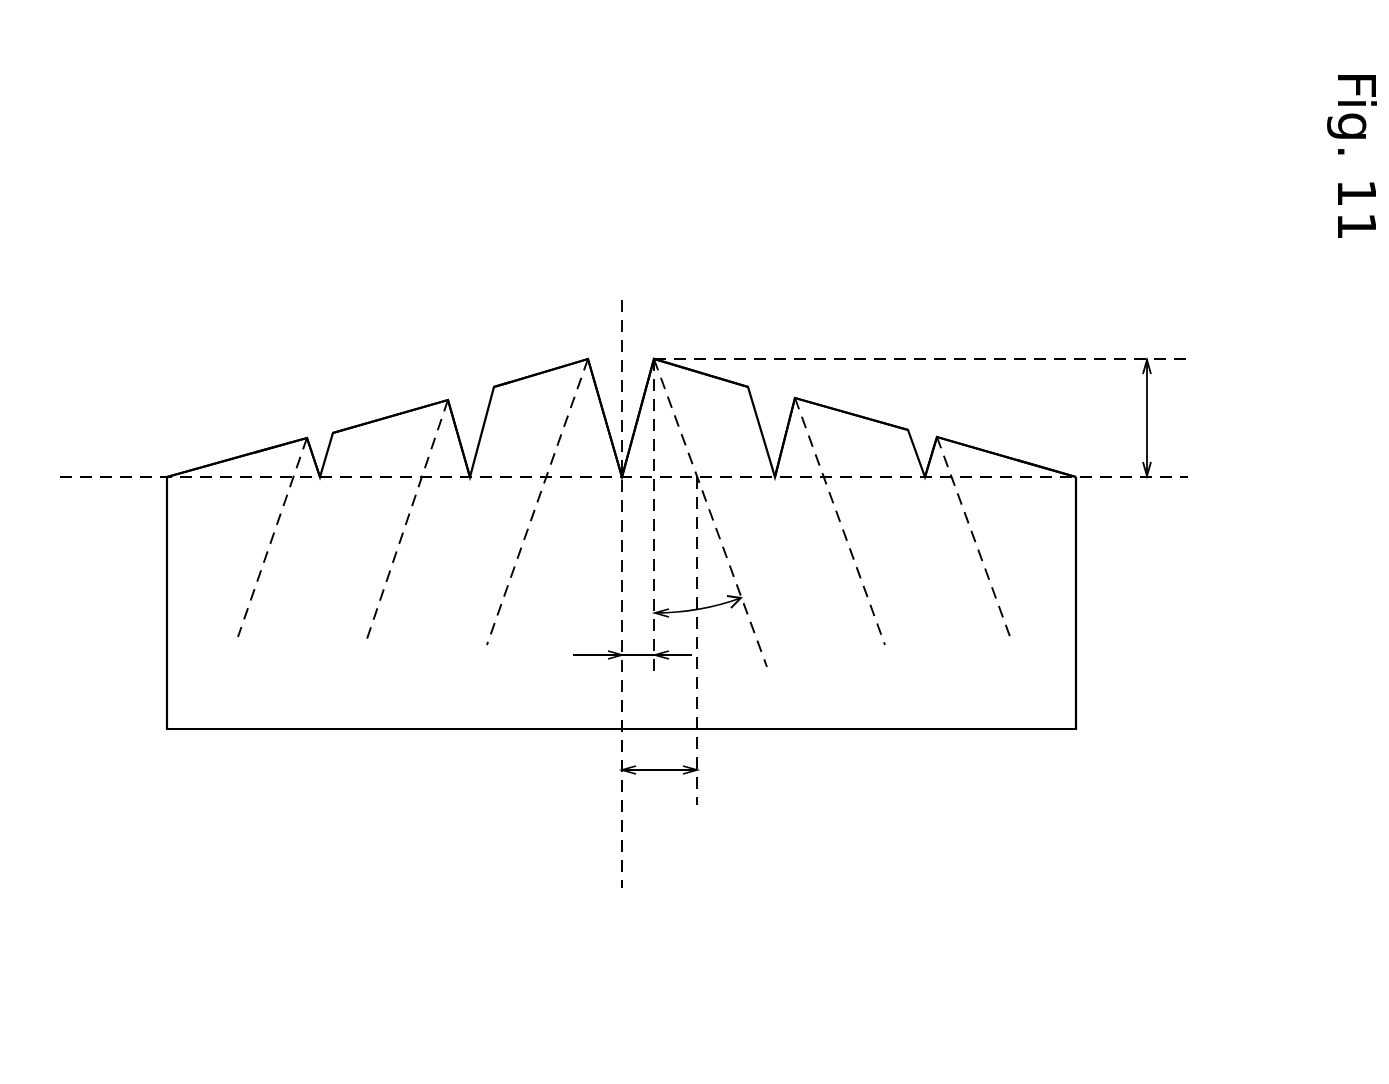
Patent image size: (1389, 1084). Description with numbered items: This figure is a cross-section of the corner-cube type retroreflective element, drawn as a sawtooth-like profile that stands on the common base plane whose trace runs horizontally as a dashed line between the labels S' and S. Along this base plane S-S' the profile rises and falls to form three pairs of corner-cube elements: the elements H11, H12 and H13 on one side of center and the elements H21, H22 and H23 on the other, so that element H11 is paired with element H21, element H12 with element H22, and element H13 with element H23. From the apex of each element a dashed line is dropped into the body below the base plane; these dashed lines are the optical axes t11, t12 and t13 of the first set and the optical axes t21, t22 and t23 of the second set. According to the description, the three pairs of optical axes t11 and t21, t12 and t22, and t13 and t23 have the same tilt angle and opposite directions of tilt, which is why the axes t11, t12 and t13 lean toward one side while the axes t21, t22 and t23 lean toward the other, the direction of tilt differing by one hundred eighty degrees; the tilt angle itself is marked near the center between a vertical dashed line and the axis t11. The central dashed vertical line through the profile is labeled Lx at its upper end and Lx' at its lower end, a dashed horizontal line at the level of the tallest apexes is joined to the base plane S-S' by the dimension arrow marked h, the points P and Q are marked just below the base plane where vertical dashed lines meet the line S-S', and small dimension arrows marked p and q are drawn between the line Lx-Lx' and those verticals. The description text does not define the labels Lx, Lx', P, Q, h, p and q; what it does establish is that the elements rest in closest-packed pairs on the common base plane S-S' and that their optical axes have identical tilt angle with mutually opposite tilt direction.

The corner-cube element H11 is at (685, 397).
The corner-cube element H12 is at (841, 422).
The corner-cube element H13 is at (1000, 434).
The corner-cube element H21 is at (558, 397).
The corner-cube element H22 is at (403, 421).
The corner-cube element H23 is at (250, 440).
The optical axis t11 is at (734, 536).
The optical axis t12 is at (860, 555).
The optical axis t13 is at (984, 575).
The optical axis t21 is at (528, 536).
The optical axis t22 is at (398, 556).
The optical axis t23 is at (263, 575).
The optical axis line Lx is at (632, 552).
The optical axis line (lower end) Lx' is at (632, 821).
The common base plane S is at (924, 477).
The common base plane S' is at (317, 477).
The point P on reference surface P is at (666, 516).
The point Q on reference surface Q is at (720, 641).
The height of peaks h is at (1165, 418).
The distance between optical axis and peak p is at (632, 671).
The distance between optical axis and point Q q is at (659, 792).